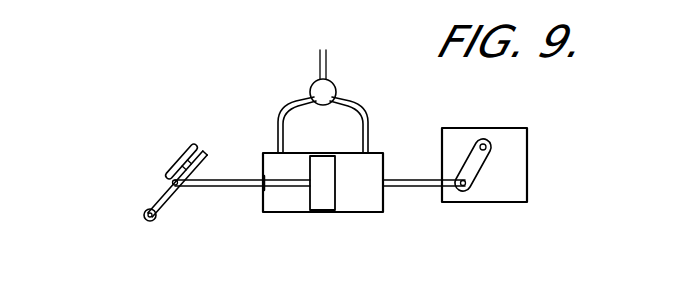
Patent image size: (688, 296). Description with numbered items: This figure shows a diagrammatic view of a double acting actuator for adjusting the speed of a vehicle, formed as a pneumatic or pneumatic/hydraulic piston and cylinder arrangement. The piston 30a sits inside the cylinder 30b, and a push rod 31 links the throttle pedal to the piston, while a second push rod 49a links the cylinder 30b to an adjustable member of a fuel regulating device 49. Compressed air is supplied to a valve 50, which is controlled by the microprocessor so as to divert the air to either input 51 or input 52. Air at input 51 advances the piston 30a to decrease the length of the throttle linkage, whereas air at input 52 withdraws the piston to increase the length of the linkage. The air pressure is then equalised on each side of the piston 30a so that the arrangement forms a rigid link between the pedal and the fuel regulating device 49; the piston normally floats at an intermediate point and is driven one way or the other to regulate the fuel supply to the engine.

The piston 30a is at (333, 188).
The cylinder 30b is at (291, 213).
The push rod 31 is at (225, 181).
The fuel regulating device 49 is at (505, 136).
The push rod 49a is at (413, 187).
The valve 50 is at (330, 90).
The input 51 is at (287, 119).
The input 52 is at (365, 112).